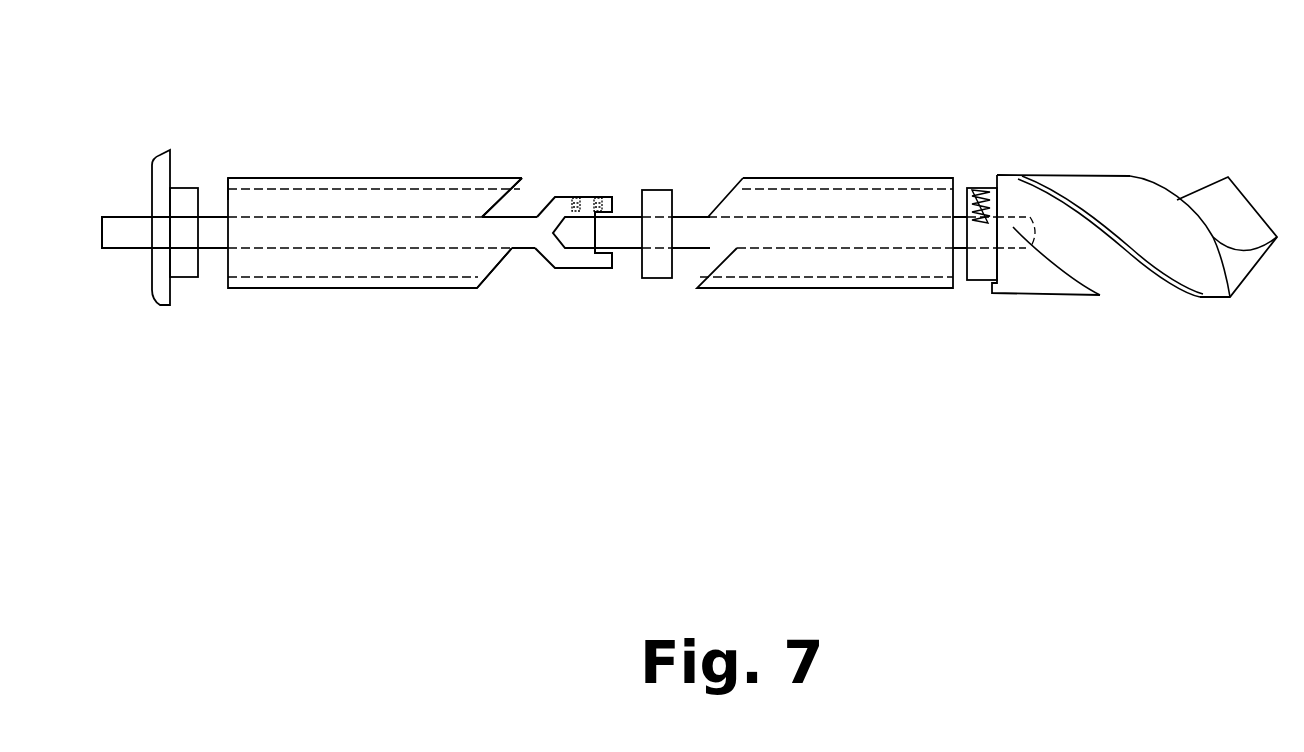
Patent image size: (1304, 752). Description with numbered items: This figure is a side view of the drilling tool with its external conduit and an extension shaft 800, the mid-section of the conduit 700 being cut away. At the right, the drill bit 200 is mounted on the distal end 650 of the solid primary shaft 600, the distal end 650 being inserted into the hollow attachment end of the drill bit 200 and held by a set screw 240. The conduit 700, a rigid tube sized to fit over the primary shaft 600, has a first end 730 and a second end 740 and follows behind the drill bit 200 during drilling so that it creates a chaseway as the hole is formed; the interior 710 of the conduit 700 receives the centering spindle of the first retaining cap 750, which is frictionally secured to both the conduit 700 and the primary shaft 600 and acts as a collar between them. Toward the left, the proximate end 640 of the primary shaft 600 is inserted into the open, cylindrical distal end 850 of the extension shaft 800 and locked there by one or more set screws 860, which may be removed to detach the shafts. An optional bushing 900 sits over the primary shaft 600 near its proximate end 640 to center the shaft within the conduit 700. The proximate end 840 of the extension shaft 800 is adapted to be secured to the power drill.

The drill bit 200 is at (1168, 285).
The set screw 240 is at (982, 190).
The primary shaft 600 is at (778, 235).
The proximate end 640 is at (627, 213).
The distal end 650 is at (1028, 222).
The conduit 700 is at (357, 288).
The interior 710 is at (427, 205).
The first end 730 is at (233, 178).
The second end 740 is at (942, 178).
The first retaining cap 750 is at (157, 170).
The extension shaft 800 is at (372, 232).
The proximate end 840 is at (114, 232).
The distal end 850 is at (548, 200).
The set screws 860 is at (598, 196).
The bushing 900 is at (657, 278).